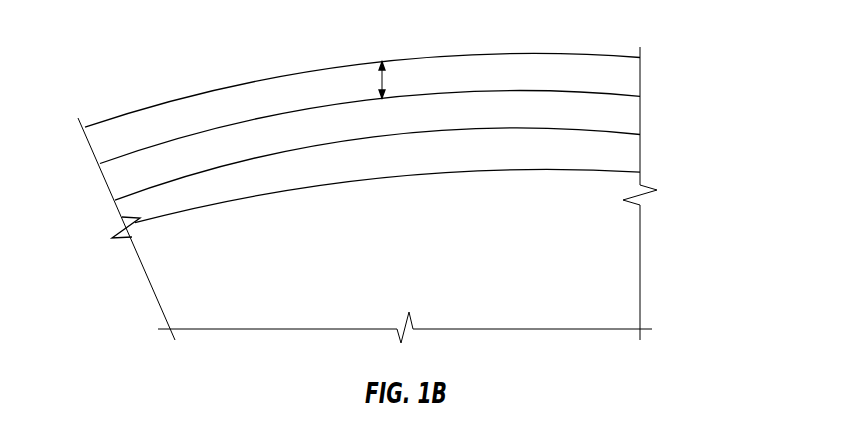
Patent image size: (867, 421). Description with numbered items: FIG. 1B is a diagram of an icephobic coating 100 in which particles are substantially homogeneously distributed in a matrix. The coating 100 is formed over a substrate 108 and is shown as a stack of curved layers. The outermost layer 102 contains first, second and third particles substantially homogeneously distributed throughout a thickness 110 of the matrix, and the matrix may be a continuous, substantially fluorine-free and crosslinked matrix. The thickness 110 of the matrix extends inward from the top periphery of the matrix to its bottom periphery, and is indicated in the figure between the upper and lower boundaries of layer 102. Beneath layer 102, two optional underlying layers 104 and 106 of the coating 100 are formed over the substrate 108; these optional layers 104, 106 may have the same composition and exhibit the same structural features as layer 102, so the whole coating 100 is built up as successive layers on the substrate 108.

The coating 100 is at (110, 242).
The layer 102 is at (641, 72).
The underlying layer 104 is at (641, 120).
The underlying layer 106 is at (641, 167).
The substrate 108 is at (422, 266).
The thickness 110 is at (379, 80).